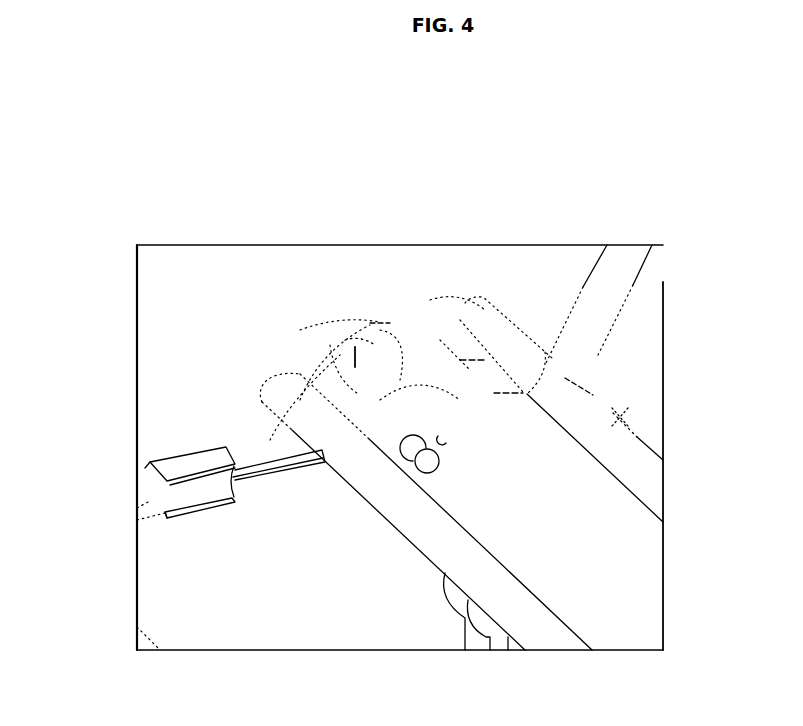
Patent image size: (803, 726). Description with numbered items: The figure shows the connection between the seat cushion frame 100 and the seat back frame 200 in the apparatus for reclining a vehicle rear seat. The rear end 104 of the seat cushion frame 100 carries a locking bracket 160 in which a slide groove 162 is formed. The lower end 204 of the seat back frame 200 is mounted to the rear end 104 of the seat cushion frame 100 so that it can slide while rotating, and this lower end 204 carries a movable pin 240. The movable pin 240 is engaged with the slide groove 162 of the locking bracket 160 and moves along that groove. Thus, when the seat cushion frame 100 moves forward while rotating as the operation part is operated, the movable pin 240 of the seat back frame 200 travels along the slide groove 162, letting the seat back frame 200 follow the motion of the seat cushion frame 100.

The seat cushion frame 100 is at (147, 500).
The rear end 104 is at (420, 530).
The locking bracket 160 is at (318, 337).
The slide groove 162 is at (370, 320).
The movable pin 240 is at (440, 330).
The seat back frame 200 is at (580, 282).
The lower end 204 is at (613, 427).